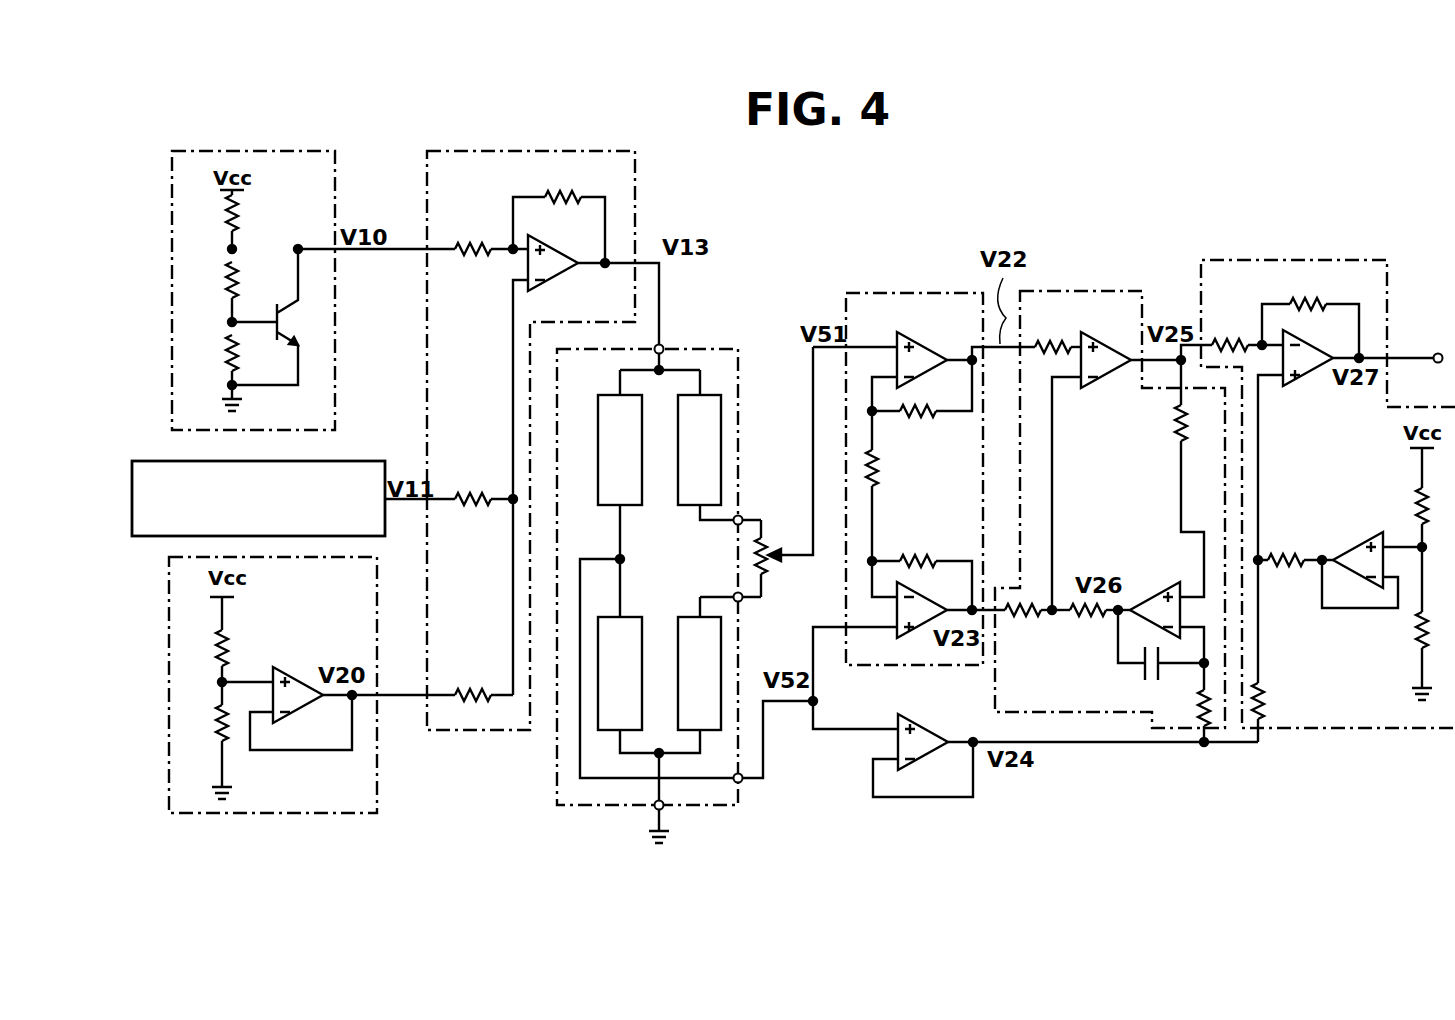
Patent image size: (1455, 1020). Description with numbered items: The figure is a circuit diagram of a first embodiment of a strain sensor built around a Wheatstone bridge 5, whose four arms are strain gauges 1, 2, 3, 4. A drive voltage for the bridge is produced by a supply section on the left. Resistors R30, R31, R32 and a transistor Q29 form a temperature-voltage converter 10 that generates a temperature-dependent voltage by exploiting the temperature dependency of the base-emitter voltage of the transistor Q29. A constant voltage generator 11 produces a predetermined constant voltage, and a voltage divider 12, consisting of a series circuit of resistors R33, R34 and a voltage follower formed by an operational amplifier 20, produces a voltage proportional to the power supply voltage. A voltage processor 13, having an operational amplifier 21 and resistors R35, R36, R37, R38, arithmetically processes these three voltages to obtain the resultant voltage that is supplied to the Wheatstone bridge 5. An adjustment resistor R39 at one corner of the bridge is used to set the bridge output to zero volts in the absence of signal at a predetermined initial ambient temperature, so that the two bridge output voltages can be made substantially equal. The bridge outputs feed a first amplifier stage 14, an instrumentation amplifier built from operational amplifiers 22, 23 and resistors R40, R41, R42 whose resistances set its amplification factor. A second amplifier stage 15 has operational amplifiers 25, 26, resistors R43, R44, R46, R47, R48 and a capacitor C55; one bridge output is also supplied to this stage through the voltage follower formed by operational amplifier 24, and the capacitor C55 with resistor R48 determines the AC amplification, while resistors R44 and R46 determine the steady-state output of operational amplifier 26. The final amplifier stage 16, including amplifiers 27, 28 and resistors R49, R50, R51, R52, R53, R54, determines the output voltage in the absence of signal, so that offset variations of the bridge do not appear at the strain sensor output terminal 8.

The strain gauge 1 is at (598, 468).
The strain gauge 2 is at (630, 613).
The strain gauge 3 is at (685, 508).
The strain gauge 4 is at (684, 597).
The Wheatstone bridge 5 is at (557, 760).
The strain sensor output terminal 8 is at (1438, 351).
The temperature-voltage converter 10 is at (290, 151).
The constant voltage generator 11 is at (148, 461).
The voltage divider 12 is at (377, 800).
The voltage processor 13 is at (493, 150).
The first amplifier stage 14 is at (926, 292).
The second amplifier stage 15 is at (1050, 290).
The final amplifier stage 16 is at (1216, 258).
The operational amplifier 20 is at (299, 672).
The operational amplifier 21 is at (568, 275).
The operational amplifier 22 is at (931, 348).
The operational amplifier 23 is at (927, 606).
The operational amplifier 24 is at (941, 729).
The operational amplifier 25 is at (1116, 376).
The operational amplifier 26 is at (1152, 592).
The amplifier 27 is at (1312, 375).
The amplifier 28 is at (1351, 545).
The transistor Q29 is at (302, 330).
The resistor R30 is at (242, 205).
The resistor R31 is at (217, 280).
The resistor R32 is at (219, 350).
The resistor R33 is at (210, 658).
The resistor R34 is at (214, 732).
The resistor R35 is at (465, 240).
The resistor R36 is at (479, 489).
The resistor R37 is at (472, 688).
The resistor R38 is at (564, 192).
The adjustment resistor R39 is at (770, 528).
The resistor R40 is at (885, 471).
The resistor R41 is at (918, 416).
The resistor R42 is at (912, 554).
The resistor R43 is at (1050, 342).
The resistor R44 is at (1026, 622).
The resistor R46 is at (1091, 615).
The resistor R47 is at (1167, 430).
The resistor R48 is at (1196, 705).
The resistor R49 is at (1239, 336).
The resistor R50 is at (1286, 574).
The resistor R51 is at (1266, 702).
The resistor R52 is at (1318, 296).
The resistor R53 is at (1411, 494).
The resistor R54 is at (1406, 630).
The capacitor C55 is at (1136, 680).